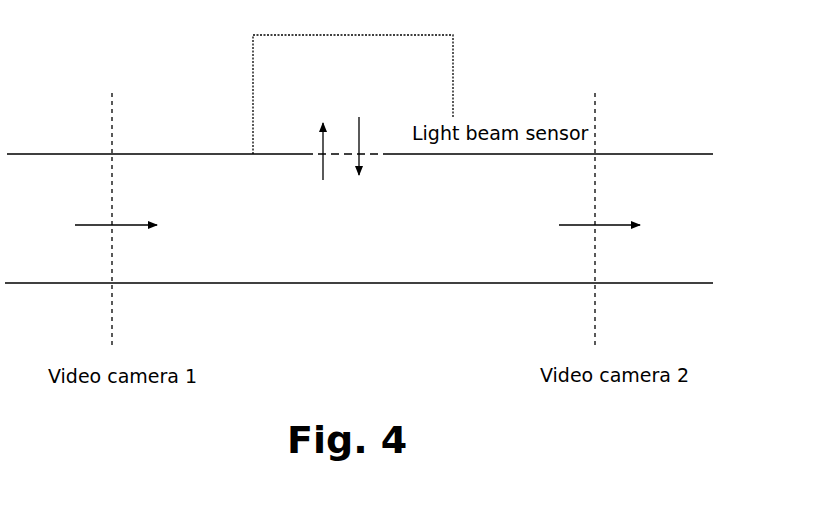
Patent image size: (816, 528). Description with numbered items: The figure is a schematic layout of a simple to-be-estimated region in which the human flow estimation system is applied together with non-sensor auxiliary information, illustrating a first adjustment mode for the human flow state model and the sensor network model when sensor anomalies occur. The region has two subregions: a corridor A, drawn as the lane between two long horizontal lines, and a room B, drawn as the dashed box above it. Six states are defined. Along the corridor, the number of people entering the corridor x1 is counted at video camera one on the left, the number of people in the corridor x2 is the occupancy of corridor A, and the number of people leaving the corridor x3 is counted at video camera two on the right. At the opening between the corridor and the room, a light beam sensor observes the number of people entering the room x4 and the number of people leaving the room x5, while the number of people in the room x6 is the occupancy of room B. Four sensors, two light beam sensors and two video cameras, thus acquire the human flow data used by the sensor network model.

The number of people entering the corridor x1 is at (117, 206).
The number of people in the corridor x2 is at (383, 224).
The number of people leaving the corridor x3 is at (605, 206).
The number of people entering the room x4 is at (306, 149).
The number of people leaving the room x5 is at (376, 146).
The number of people in the room x6 is at (345, 72).
The corridor subregion A is at (320, 224).
The room subregion B is at (353, 94).